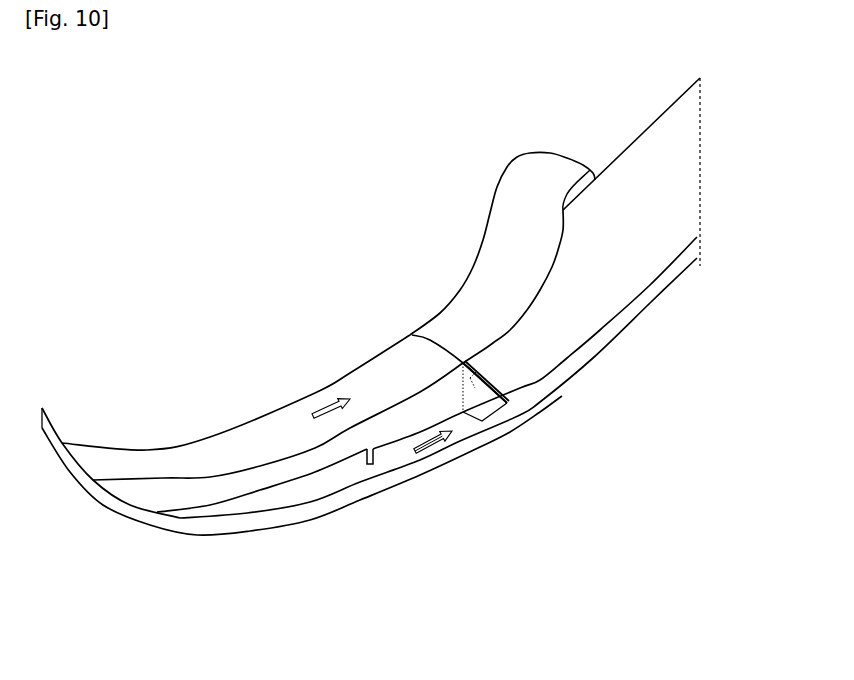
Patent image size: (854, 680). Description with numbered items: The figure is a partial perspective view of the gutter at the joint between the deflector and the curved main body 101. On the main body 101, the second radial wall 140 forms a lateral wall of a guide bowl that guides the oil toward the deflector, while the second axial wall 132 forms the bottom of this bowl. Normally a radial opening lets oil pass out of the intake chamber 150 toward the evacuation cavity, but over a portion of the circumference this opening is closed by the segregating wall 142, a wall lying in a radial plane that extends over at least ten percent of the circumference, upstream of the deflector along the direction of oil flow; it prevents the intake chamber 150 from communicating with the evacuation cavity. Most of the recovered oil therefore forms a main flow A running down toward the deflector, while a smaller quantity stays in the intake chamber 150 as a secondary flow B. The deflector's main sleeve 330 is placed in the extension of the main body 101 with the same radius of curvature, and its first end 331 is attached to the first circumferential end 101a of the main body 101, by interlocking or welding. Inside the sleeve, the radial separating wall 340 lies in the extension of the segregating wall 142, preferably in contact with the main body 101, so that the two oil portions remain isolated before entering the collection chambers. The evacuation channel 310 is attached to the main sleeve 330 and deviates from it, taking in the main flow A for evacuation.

The main body 101 is at (110, 448).
The first circumferential end 101a is at (425, 341).
The second axial wall 132 is at (245, 440).
The second radial wall 140 is at (220, 490).
The segregating wall 142 is at (397, 440).
The intake chamber 150 is at (247, 504).
The evacuation channel 310 is at (527, 163).
The main sleeve 330 is at (607, 252).
The first end 331 is at (493, 380).
The radial separating wall 340 is at (473, 445).
The main flow A is at (337, 402).
The secondary flow B is at (442, 442).